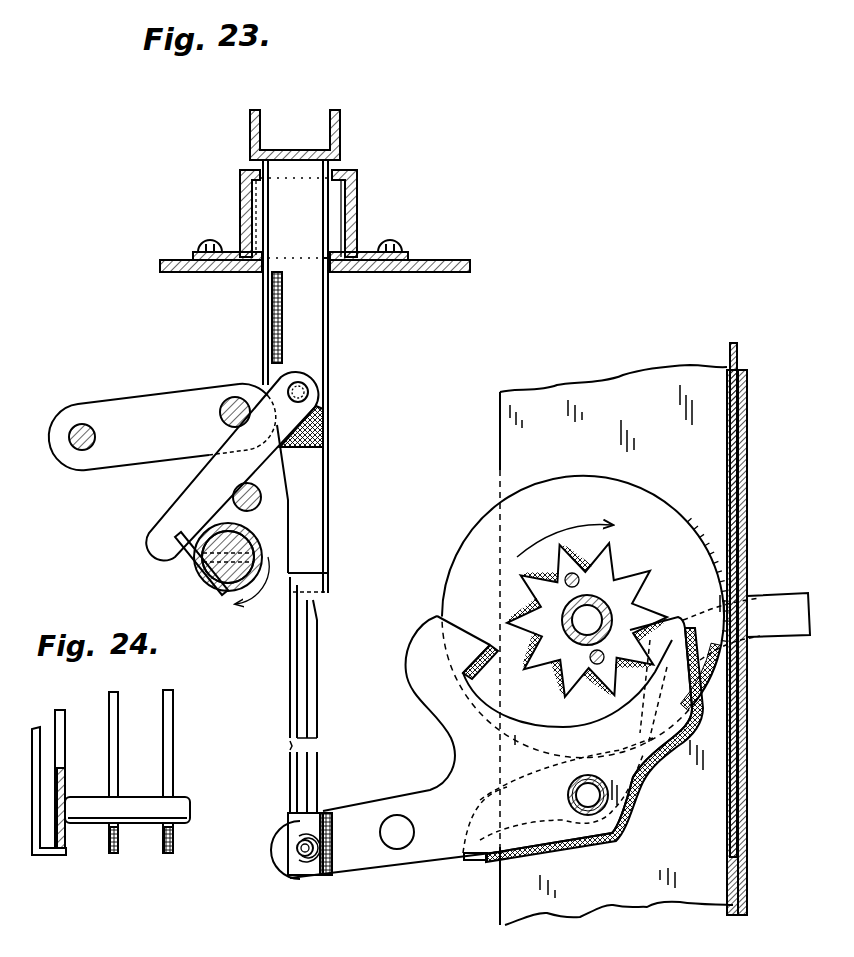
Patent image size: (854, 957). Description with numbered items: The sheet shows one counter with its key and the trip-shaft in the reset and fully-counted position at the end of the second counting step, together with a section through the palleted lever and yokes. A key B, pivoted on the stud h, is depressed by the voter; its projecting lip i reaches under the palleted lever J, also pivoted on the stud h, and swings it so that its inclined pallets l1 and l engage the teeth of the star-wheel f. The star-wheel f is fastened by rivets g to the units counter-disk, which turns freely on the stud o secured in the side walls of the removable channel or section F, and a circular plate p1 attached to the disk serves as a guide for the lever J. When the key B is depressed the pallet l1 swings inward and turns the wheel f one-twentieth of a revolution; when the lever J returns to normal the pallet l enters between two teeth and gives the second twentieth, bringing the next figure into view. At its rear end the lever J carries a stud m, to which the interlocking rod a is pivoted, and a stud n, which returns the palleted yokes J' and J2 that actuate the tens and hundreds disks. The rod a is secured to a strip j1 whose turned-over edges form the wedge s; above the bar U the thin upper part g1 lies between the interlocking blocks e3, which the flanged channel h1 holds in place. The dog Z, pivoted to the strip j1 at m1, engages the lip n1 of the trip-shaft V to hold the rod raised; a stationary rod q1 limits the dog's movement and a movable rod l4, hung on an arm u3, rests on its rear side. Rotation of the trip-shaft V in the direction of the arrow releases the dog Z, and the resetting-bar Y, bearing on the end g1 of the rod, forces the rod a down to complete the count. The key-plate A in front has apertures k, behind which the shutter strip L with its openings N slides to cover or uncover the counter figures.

In FIG. 23, the resetting-bar Y is at (337, 135).
In FIG. 23, the channel h1 is at (242, 187).
In FIG. 23, the upper part of interlocking rod g1 is at (295, 179).
In FIG. 23, the interlocking blocks e3 is at (337, 236).
In FIG. 23, the bar U is at (413, 273).
In FIG. 23, the wedge-like portion s is at (265, 303).
In FIG. 23, the strip j1 is at (295, 376).
In FIG. 23, the interlocking rod a is at (314, 721).
In FIG. 23, the arm u3 is at (162, 427).
In FIG. 23, the movable rod l4 is at (222, 412).
In FIG. 23, the dog Z is at (232, 466).
In FIG. 23, the pivot m1 is at (305, 388).
In FIG. 23, the stationary rod q1 is at (254, 502).
In FIG. 23, the trip-shaft V is at (203, 585).
In FIG. 23, the lip n1 is at (180, 550).
In FIG. 23, the palleted lever J is at (487, 747).
In FIG. 24, the palleted lever J is at (64, 779).
In FIG. 23, the stud n is at (397, 832).
In FIG. 24, the stud n is at (127, 810).
In FIG. 23, the stud m is at (301, 851).
In FIG. 23, the projecting lip i is at (473, 861).
In FIG. 24, the projecting lip i is at (50, 862).
In FIG. 23, the pallet l1 is at (467, 647).
In FIG. 23, the pallet l is at (657, 681).
In FIG. 23, the circular plate p1 is at (585, 617).
In FIG. 23, the star-wheel f is at (587, 620).
In FIG. 23, the stud o is at (587, 620).
In FIG. 23, the rivets g is at (566, 584).
In FIG. 23, the stud h is at (600, 785).
In FIG. 23, the channel F is at (616, 645).
In FIG. 23, the key-plate A is at (748, 477).
In FIG. 23, the shutter strip L is at (740, 355).
In FIG. 23, the key B is at (778, 615).
In FIG. 24, the key B is at (38, 791).
In FIG. 23, the apertures k is at (745, 597).
In FIG. 23, the openings N is at (735, 643).
In FIG. 24, the palleted yoke J' is at (122, 772).
In FIG. 24, the palleted yoke J2 is at (178, 771).